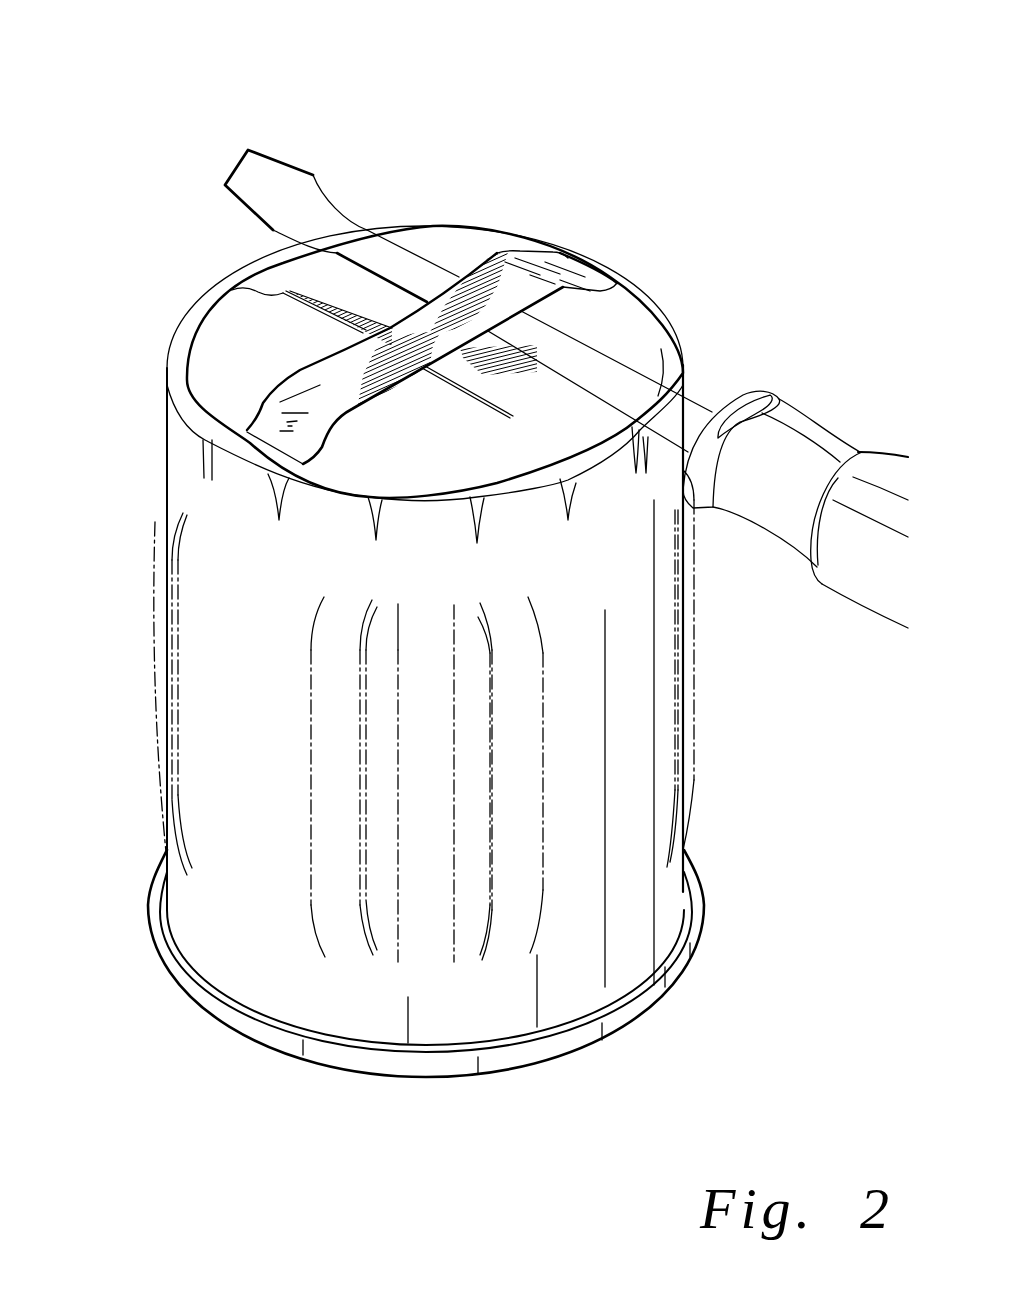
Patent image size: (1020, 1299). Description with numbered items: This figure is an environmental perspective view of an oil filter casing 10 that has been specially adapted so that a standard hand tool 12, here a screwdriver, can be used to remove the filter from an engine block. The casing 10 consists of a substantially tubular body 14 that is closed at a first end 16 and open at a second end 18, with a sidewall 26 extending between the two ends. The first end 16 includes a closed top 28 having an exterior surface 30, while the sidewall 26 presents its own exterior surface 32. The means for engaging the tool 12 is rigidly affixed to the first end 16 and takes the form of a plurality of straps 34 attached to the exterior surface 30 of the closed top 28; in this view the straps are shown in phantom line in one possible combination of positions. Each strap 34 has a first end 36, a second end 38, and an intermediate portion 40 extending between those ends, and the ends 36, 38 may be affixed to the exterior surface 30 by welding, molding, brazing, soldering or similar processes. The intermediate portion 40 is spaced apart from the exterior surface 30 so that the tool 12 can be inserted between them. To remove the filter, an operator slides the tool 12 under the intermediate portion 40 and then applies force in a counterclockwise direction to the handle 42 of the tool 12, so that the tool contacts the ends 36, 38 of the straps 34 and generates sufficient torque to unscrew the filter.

The oil filter casing 10 is at (612, 84).
The hand tool 12 is at (695, 410).
The tubular body 14 is at (750, 747).
The first end 16 is at (652, 284).
The second end 18 is at (715, 905).
The sidewall 26 is at (252, 705).
The closed top 28 is at (432, 455).
The exterior surface 30 is at (462, 241).
The exterior surface 32 is at (627, 683).
The strap 34 is at (323, 372).
The first end 36 is at (257, 397).
The second end 38 is at (542, 236).
The intermediate portion 40 is at (427, 397).
The handle 42 is at (864, 440).